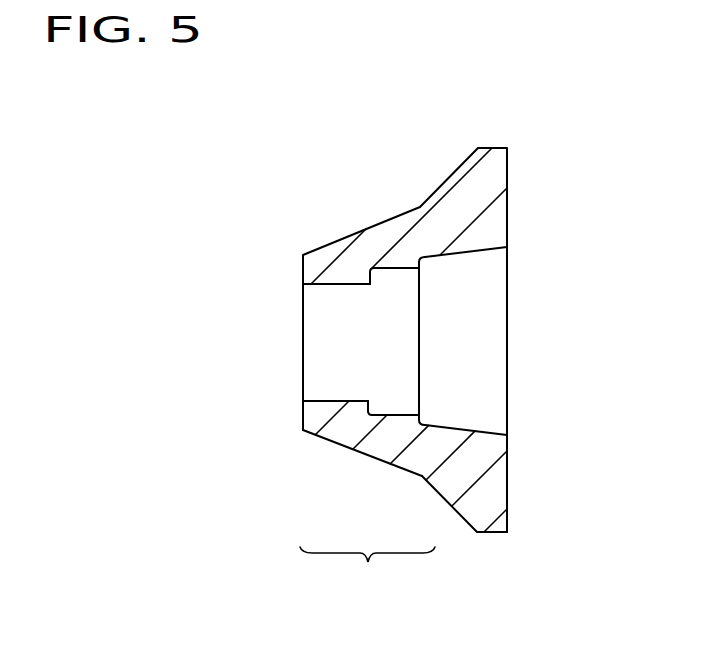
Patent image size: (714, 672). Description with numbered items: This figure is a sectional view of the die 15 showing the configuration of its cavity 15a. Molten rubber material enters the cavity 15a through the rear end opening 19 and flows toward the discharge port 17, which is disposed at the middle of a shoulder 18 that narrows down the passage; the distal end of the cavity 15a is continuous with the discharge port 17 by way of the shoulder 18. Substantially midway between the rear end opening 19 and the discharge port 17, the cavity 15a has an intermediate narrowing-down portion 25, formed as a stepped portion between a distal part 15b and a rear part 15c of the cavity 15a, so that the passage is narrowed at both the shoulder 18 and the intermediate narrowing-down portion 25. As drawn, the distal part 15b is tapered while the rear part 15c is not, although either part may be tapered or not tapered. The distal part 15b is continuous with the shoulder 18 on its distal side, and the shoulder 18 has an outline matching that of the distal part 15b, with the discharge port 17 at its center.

The die 15 is at (366, 226).
The cavity 15a is at (367, 573).
The distal part of the cavity 15b is at (348, 447).
The rear part of the cavity 15c is at (437, 418).
The discharge port 17 is at (315, 372).
The shoulder 18 is at (370, 272).
The rear end opening 19 is at (497, 414).
The intermediate narrowing-down portion 25 is at (420, 277).